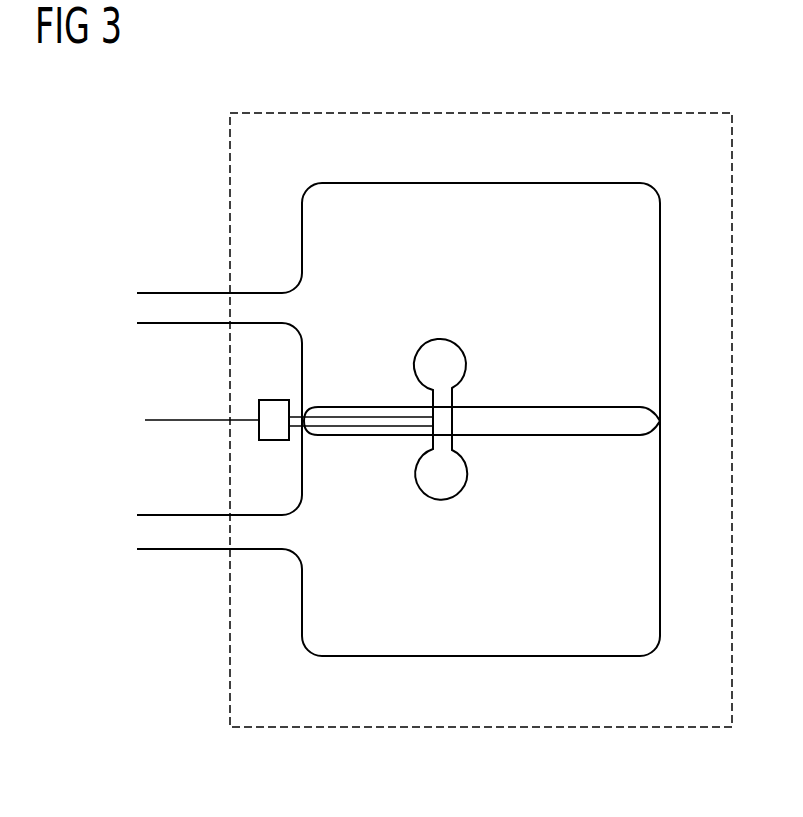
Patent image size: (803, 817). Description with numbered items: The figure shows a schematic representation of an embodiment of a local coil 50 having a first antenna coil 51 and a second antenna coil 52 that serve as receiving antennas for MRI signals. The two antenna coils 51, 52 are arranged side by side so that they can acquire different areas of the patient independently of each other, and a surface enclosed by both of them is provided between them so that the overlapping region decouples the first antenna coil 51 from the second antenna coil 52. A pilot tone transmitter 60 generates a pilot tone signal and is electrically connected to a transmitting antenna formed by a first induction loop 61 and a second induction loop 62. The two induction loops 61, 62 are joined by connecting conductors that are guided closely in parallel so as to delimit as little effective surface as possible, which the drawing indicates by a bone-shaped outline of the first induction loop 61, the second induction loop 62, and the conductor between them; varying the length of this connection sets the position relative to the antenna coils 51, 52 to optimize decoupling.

The local coil 50 is at (634, 103).
The first antenna coil 51 is at (662, 290).
The second antenna coil 52 is at (662, 505).
The pilot tone transmitter 60 is at (272, 441).
The first induction loop 61 is at (467, 362).
The second induction loop 62 is at (467, 473).